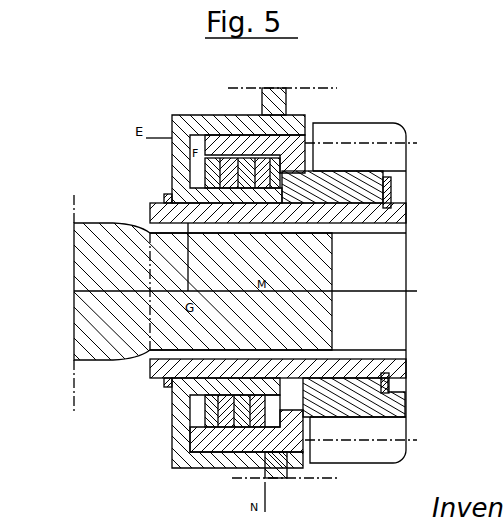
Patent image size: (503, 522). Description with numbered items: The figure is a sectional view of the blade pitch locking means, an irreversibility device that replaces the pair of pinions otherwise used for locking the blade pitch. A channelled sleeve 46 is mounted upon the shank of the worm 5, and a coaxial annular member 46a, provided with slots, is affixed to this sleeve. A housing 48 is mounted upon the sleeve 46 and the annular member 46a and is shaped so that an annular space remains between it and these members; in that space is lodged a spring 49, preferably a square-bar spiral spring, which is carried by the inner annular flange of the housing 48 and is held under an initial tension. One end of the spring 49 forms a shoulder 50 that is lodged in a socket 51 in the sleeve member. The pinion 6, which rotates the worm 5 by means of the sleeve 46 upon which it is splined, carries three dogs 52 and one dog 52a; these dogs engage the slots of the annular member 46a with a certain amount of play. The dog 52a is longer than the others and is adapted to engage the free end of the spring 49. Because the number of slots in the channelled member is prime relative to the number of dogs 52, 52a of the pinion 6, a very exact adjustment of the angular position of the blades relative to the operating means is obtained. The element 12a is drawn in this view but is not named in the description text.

The worm 5 is at (92, 270).
The pinion 6 is at (397, 137).
The spacer block 12a is at (272, 88).
The channelled sleeve 46 is at (406, 211).
The coaxial annular member 46a is at (298, 135).
The housing 48 is at (192, 115).
The spring 49 is at (265, 163).
The shoulder 50 is at (197, 171).
The socket 51 is at (201, 135).
The dog 52 is at (290, 180).
The longer dog 52a is at (296, 402).